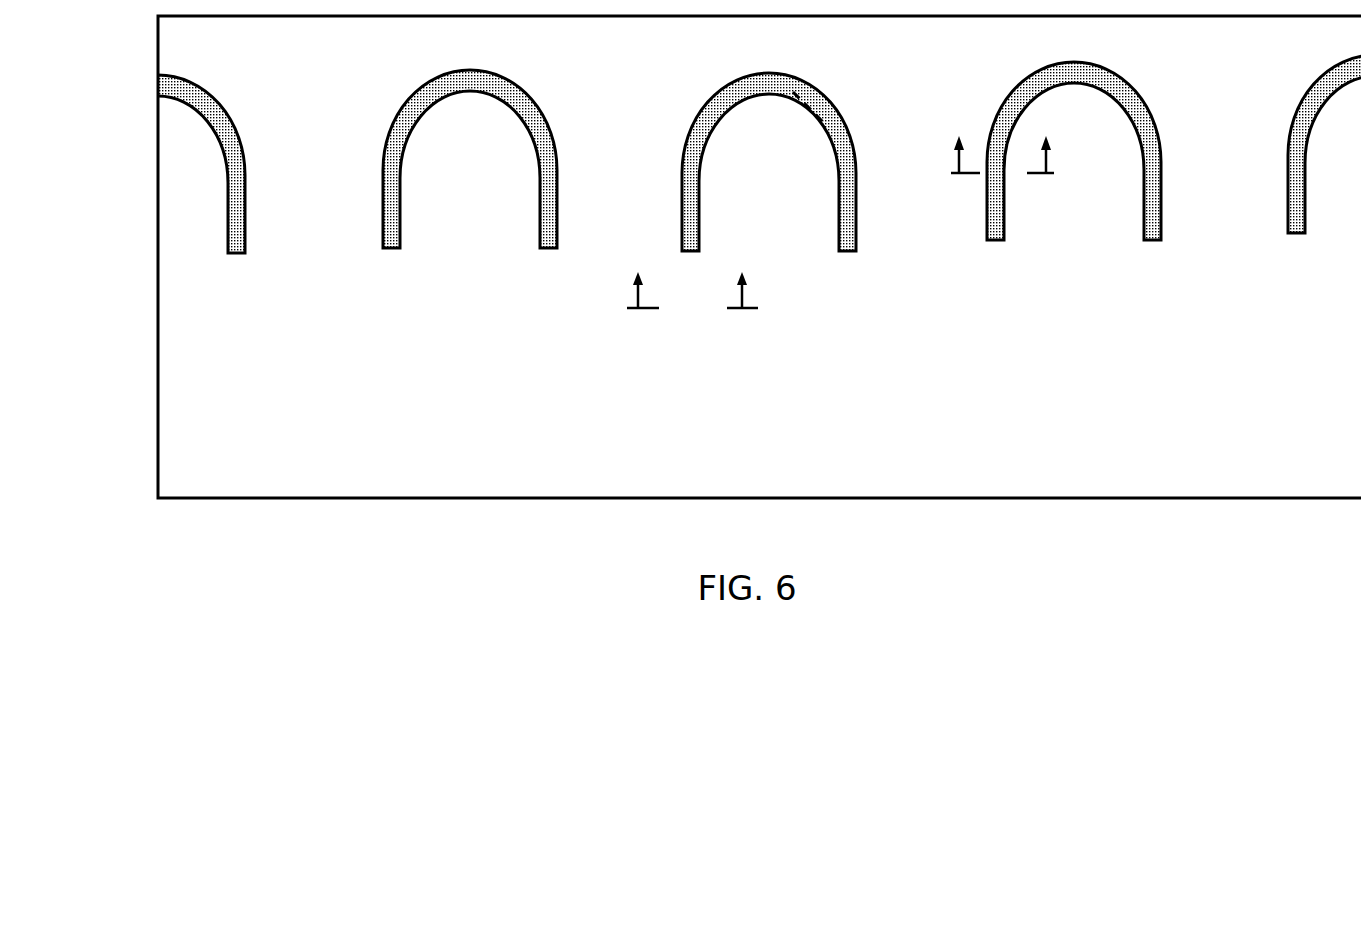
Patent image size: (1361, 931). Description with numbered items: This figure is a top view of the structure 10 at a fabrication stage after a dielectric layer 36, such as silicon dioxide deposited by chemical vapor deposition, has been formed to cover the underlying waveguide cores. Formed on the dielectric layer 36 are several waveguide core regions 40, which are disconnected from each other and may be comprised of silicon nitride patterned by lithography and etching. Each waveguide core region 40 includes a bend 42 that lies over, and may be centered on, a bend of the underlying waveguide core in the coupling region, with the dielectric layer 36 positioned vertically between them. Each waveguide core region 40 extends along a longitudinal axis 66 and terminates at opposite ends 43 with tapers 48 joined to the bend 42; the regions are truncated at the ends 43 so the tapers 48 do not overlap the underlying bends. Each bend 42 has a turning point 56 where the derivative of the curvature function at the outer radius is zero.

The structure 10 is at (272, 74).
The dielectric layer 36 is at (289, 459).
The waveguide core region 40 is at (358, 166).
The bend 42 is at (410, 121).
The opposite ends 43 is at (398, 249).
The taper 48 is at (395, 232).
The turning point 56 is at (470, 73).
The longitudinal axis 66 is at (813, 107).